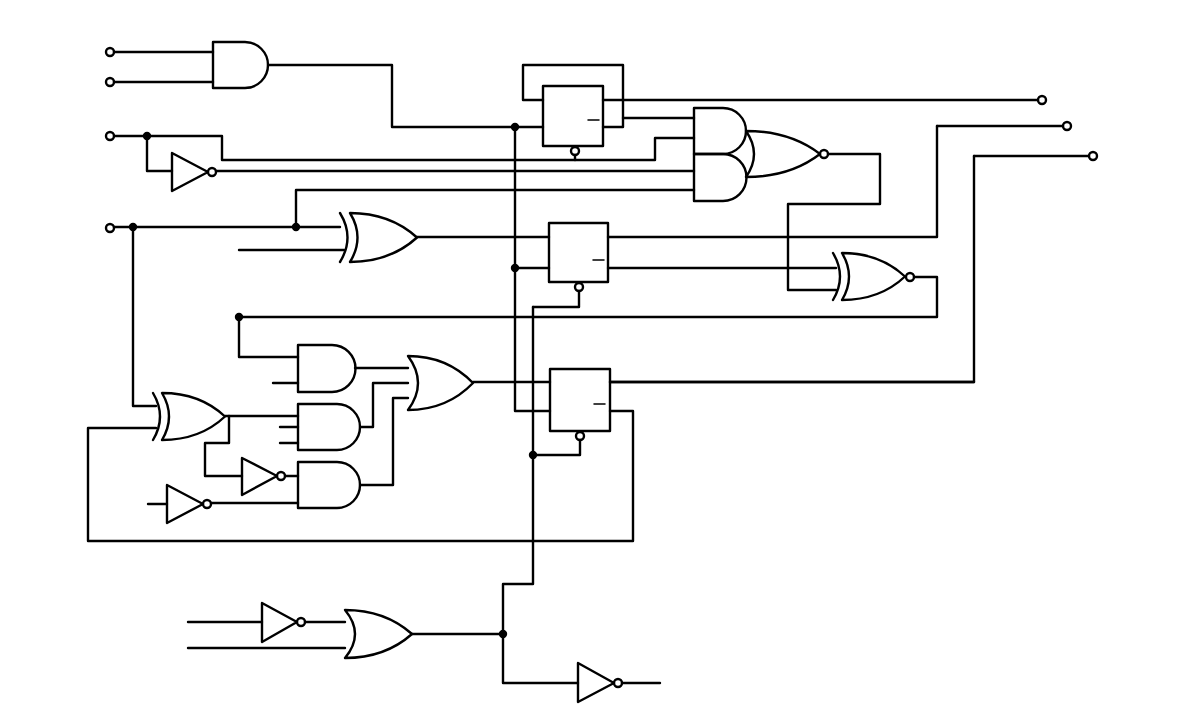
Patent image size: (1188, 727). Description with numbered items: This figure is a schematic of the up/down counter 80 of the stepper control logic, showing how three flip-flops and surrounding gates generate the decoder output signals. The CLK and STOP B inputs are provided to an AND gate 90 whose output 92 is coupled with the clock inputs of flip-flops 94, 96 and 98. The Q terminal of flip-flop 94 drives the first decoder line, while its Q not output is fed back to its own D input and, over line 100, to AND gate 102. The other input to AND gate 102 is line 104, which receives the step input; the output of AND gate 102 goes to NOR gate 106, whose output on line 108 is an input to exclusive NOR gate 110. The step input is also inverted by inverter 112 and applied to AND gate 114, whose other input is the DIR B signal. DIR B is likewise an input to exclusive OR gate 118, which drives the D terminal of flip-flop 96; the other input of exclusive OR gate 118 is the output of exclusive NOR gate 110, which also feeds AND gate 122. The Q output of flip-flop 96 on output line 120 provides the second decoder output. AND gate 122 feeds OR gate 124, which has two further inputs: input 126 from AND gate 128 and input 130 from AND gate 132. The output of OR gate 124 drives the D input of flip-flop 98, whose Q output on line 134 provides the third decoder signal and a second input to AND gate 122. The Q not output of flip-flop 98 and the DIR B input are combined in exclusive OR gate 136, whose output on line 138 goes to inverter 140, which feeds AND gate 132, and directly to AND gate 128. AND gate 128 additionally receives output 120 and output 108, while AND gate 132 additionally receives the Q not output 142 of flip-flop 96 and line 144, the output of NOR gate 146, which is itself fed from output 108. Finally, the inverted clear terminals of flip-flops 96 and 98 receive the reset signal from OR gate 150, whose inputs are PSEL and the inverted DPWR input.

The up/down counter 80 is at (640, 33).
The AND gate 90 is at (251, 43).
The output of AND gate 90 92 is at (338, 66).
The flip-flop 94 is at (566, 86).
The flip-flop 96 is at (570, 223).
The flip-flop 98 is at (575, 369).
The line 100 is at (636, 120).
The AND gate 102 is at (742, 122).
The line 104 is at (305, 160).
The NOR gate 106 is at (808, 141).
The line 108 is at (862, 156).
The exclusive NOR gate 110 is at (887, 262).
The inverter 112 is at (196, 181).
The AND gate 114 is at (727, 203).
The exclusive OR gate 118 is at (396, 254).
The output line 120 is at (642, 239).
The AND gate 122 is at (352, 354).
The OR gate 124 is at (455, 372).
The input 126 is at (404, 386).
The AND gate 128 is at (343, 443).
The input 130 is at (397, 427).
The AND gate 132 is at (357, 497).
The output line 134 is at (288, 383).
The exclusive OR gate 136 is at (187, 395).
The line 138 is at (253, 413).
The inverter 140 is at (242, 488).
The Q not output 142 is at (635, 269).
The line 144 is at (229, 508).
The NOR gate 146 is at (178, 484).
The OR gate 150 is at (388, 620).